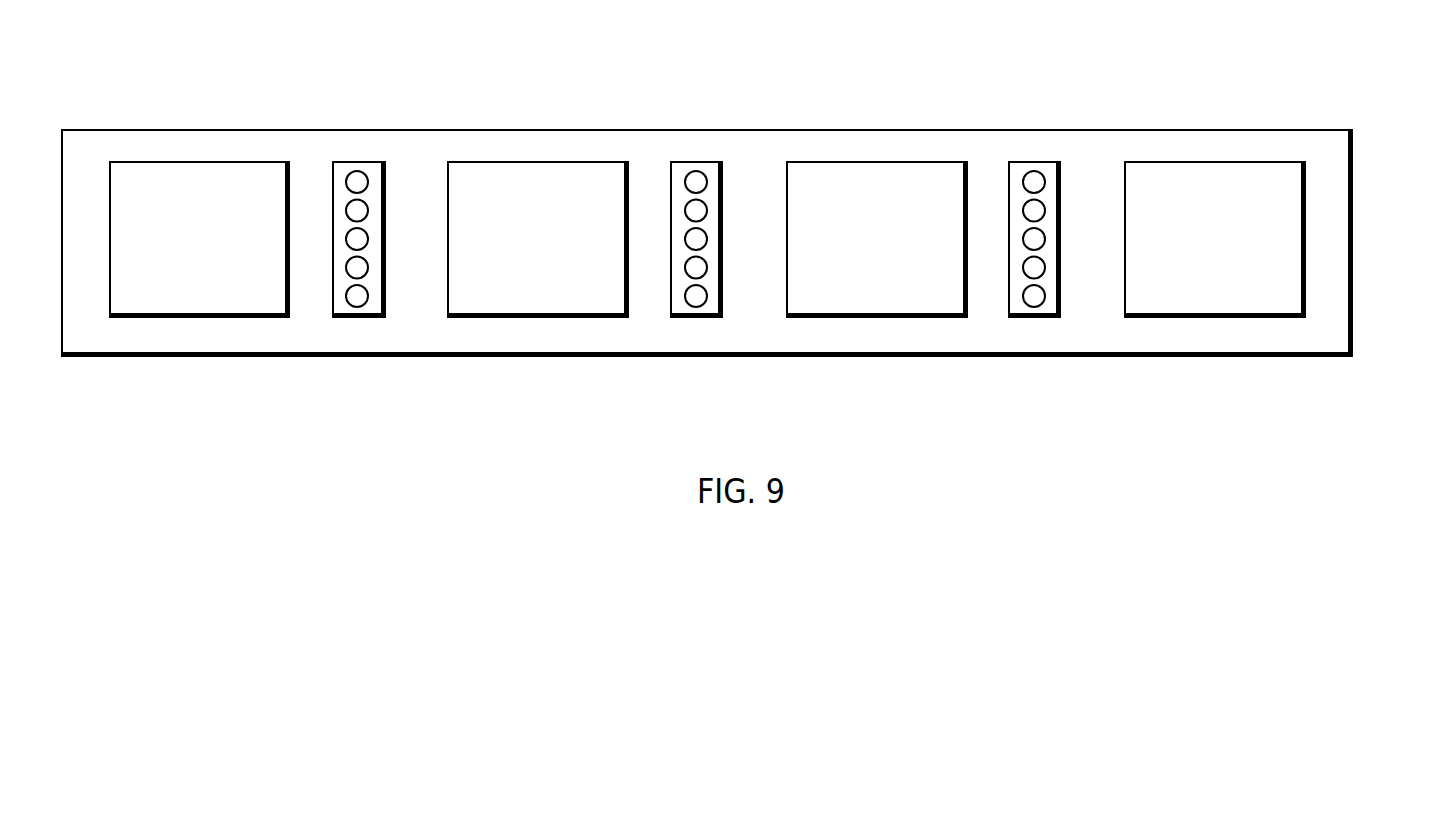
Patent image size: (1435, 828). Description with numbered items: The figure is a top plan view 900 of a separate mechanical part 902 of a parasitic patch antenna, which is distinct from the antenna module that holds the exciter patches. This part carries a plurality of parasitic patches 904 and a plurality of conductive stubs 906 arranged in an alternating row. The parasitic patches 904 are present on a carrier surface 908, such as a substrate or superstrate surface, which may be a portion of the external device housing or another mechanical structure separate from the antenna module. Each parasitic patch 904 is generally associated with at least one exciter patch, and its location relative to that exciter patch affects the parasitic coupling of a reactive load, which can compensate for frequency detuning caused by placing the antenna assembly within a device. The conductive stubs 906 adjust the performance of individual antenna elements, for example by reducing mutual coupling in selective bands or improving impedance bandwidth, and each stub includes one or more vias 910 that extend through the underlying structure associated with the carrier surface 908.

The top plan view 900 is at (127, 78).
The separate mechanical part 902 is at (705, 130).
The parasitic patches 904 is at (202, 318).
The conductive stubs 906 is at (358, 318).
The carrier surface 908 is at (1335, 242).
The vias 910 is at (1034, 170).